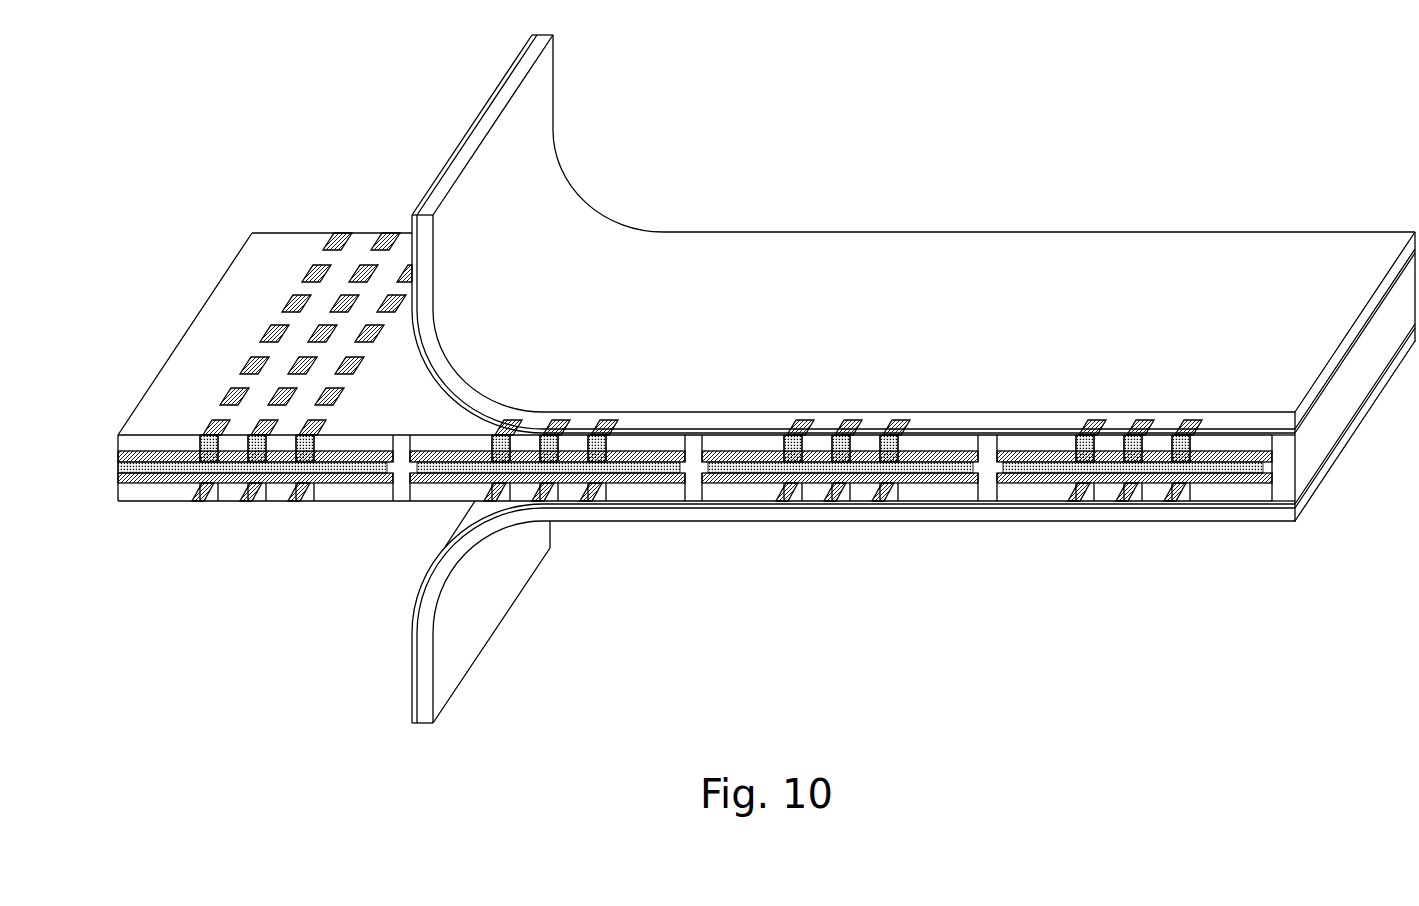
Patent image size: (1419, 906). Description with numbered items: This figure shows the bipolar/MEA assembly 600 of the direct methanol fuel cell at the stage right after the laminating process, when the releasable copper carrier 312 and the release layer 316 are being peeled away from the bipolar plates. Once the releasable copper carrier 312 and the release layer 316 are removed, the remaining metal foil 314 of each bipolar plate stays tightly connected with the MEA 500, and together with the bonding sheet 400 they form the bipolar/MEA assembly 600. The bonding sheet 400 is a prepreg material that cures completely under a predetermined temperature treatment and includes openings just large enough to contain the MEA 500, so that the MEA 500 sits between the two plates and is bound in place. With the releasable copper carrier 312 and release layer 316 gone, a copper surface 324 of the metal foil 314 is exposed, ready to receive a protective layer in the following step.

The releasable copper carrier 312 is at (1162, 423).
The metal foil 314 is at (130, 443).
The release layer 316 is at (1273, 431).
The copper surface 324 is at (258, 272).
The bonding sheet 400 is at (403, 468).
The MEA 500 is at (118, 467).
The bipolar/MEA assembly 600 is at (925, 165).